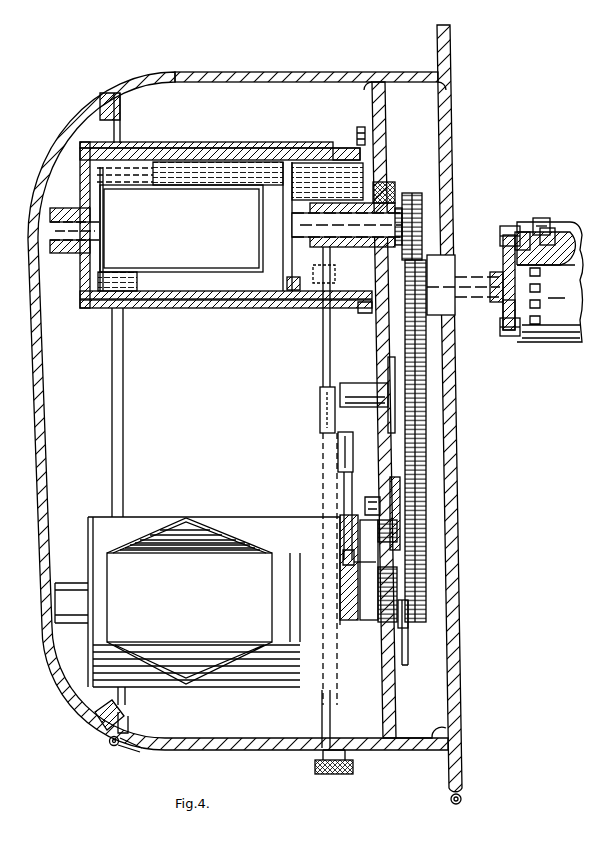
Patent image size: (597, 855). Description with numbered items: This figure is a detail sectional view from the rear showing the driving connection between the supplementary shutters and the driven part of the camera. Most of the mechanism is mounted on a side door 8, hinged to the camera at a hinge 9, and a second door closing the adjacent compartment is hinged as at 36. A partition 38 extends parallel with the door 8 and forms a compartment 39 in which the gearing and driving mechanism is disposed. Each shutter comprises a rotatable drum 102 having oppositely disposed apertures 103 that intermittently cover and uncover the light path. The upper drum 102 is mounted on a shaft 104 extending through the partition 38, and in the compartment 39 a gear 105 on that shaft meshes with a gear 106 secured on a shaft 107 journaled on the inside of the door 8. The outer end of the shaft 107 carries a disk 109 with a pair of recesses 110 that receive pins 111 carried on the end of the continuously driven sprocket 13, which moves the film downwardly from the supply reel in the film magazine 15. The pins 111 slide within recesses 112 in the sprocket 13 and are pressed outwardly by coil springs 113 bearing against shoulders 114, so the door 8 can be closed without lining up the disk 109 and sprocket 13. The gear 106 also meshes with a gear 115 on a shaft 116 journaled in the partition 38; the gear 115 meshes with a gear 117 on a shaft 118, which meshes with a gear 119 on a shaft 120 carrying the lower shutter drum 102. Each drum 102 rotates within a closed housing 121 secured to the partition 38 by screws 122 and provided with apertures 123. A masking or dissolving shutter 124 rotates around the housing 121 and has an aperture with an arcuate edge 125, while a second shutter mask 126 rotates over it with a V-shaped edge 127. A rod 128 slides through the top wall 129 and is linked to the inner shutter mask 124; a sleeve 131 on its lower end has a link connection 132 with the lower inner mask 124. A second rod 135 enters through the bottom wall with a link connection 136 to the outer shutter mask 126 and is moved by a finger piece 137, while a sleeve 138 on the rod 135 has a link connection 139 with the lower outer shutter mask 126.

The side door 8 is at (456, 668).
The hinge 9 is at (462, 799).
The continuously driven sprocket 13 is at (575, 225).
The film magazine 15 is at (27, 230).
The hinge 36 is at (110, 745).
The partition 38 is at (388, 457).
The compartment 39 is at (440, 702).
The rotatable drum 102 is at (278, 202).
The apertures 103 is at (197, 272).
The shaft 104 is at (375, 197).
The gear 105 is at (421, 203).
The gear 106 is at (441, 253).
The shaft 107 is at (497, 280).
The disk 109 is at (505, 306).
The recesses 110 is at (505, 246).
The pins 111 is at (505, 237).
The recesses 112 is at (548, 230).
The coil springs 113 is at (538, 222).
The shoulders 114 is at (520, 236).
The gear 115 is at (430, 422).
The shaft 116 is at (360, 388).
The gear 117 is at (412, 517).
The shaft 118 is at (385, 507).
The gear 119 is at (428, 612).
The shaft 120 is at (412, 641).
The closed housing 121 is at (341, 150).
The screws 122 is at (365, 136).
The apertures 123 is at (178, 210).
The masking or dissolving shutter 124 is at (263, 150).
The arcuate edge 125 is at (176, 549).
The second shutter mask 126 is at (247, 142).
The V-shaped edge 127 is at (159, 530).
The rod 128 is at (351, 500).
The top wall 129 is at (227, 78).
The sleeve 131 is at (355, 452).
The link connection 132 is at (398, 562).
The second rod 135 is at (322, 358).
The link connection 136 is at (281, 310).
The finger piece 137 is at (330, 770).
The sleeve 138 is at (305, 426).
The link connection 139 is at (267, 688).